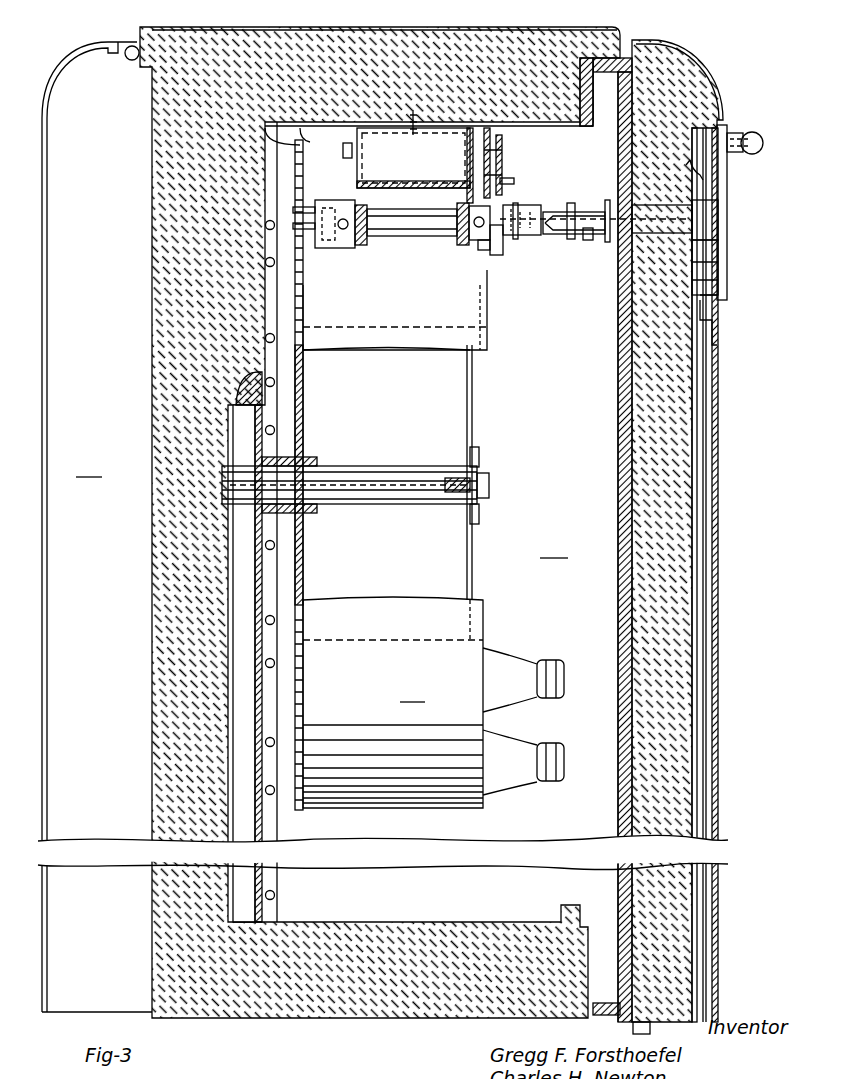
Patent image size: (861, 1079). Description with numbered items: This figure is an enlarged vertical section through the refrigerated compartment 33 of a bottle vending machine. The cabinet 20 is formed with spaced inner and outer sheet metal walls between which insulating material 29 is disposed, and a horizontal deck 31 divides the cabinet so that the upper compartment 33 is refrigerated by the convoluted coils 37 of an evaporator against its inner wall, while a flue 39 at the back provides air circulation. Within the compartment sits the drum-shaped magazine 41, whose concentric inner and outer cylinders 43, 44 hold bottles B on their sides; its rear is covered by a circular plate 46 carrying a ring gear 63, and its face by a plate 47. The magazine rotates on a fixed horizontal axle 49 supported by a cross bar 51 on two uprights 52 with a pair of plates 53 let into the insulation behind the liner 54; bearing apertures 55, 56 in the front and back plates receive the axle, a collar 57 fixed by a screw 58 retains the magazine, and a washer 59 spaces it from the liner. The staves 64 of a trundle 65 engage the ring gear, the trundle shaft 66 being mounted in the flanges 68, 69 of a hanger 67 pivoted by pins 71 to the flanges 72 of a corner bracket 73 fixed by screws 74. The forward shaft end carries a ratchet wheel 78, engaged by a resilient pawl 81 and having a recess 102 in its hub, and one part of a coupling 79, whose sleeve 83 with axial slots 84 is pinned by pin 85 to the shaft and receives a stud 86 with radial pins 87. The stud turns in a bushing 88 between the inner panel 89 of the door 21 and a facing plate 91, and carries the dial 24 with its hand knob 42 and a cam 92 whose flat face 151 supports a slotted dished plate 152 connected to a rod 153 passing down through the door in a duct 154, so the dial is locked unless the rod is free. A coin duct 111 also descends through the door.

The cabinet 20 is at (545, 30).
The door 21 is at (695, 62).
The dial 24 is at (727, 183).
The insulating material 29 is at (152, 650).
The horizontal deck 31 is at (388, 922).
The refrigerated compartment 33 is at (554, 546).
The evaporator coils 37 is at (276, 892).
The flue 39 is at (89, 465).
The magazine 41 is at (393, 702).
The hand knob 42 is at (755, 132).
The inner cylinder 43 is at (400, 312).
The outer cylinder 44 is at (410, 350).
The rear plate 46 is at (303, 410).
The face plate 47 is at (473, 410).
The axle 49 is at (385, 504).
The cross bar 51 is at (265, 385).
The uprights 52 is at (266, 660).
The plates 53 is at (240, 535).
The liner 54 is at (262, 917).
The front bearing aperture 55 is at (465, 510).
The rear bearing aperture 56 is at (310, 513).
The collar 57 is at (479, 452).
The screw 58 is at (489, 485).
The washer 59 is at (303, 457).
The ring gear 63 is at (300, 300).
The staves 64 is at (305, 230).
The trundle 65 is at (340, 248).
The trundle shaft 66 is at (410, 236).
The hanger 67 is at (397, 193).
The hanger flange 68 is at (362, 245).
The hanger flange 69 is at (465, 245).
The pins 71 is at (343, 152).
The bracket flanges 72 is at (322, 130).
The corner bracket 73 is at (415, 165).
The screws 74 is at (416, 140).
The ratchet wheel 78 is at (492, 250).
The coupling 79 is at (540, 205).
The pawl 81 is at (514, 181).
The sleeve 83 is at (552, 240).
The axial slots 84 is at (607, 200).
The pin 85 is at (520, 239).
The stud 86 is at (590, 240).
The radial pins 87 is at (571, 203).
The bushing 88 is at (640, 233).
The inner panel 89 is at (618, 343).
The facing plate 91 is at (704, 174).
The cam 92 is at (718, 236).
The recess 102 is at (465, 200).
The duct 111 is at (630, 1028).
The flat face 151 is at (722, 210).
The slotted dished plate 152 is at (700, 290).
The rod 153 is at (712, 380).
The duct 154 is at (710, 560).
The bottles B is at (515, 700).